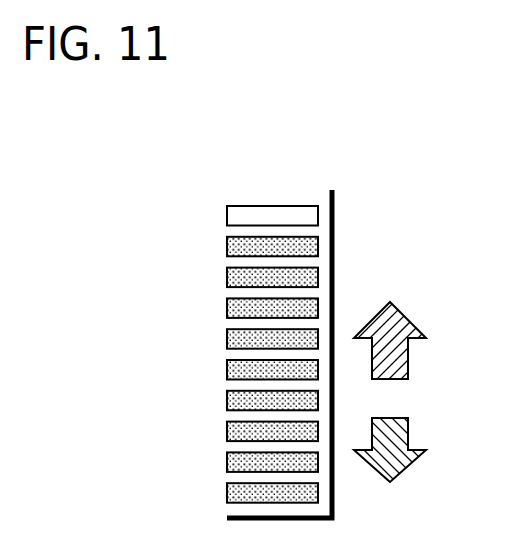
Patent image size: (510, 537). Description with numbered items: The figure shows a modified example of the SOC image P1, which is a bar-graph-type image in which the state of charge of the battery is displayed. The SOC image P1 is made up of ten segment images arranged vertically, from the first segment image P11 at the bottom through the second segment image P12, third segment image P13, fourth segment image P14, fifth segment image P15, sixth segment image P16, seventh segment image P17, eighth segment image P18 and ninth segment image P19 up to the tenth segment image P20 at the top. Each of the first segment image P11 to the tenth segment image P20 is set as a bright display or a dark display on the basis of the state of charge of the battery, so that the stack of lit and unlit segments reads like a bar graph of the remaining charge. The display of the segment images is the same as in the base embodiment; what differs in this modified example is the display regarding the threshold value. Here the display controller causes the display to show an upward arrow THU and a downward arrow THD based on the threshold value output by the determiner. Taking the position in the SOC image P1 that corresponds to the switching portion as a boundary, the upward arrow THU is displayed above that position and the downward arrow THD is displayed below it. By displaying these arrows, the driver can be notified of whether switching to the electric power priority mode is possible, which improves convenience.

The SOC image P1 is at (270, 186).
The first segment image P11 is at (226, 492).
The second segment image P12 is at (226, 461).
The third segment image P13 is at (226, 431).
The fourth segment image P14 is at (226, 400).
The fifth segment image P15 is at (226, 369).
The sixth segment image P16 is at (226, 338).
The seventh segment image P17 is at (226, 307).
The eighth segment image P18 is at (226, 277).
The ninth segment image P19 is at (226, 246).
The tenth segment image P20 is at (226, 215).
The upward arrow THU is at (411, 355).
The downward arrow THD is at (411, 433).